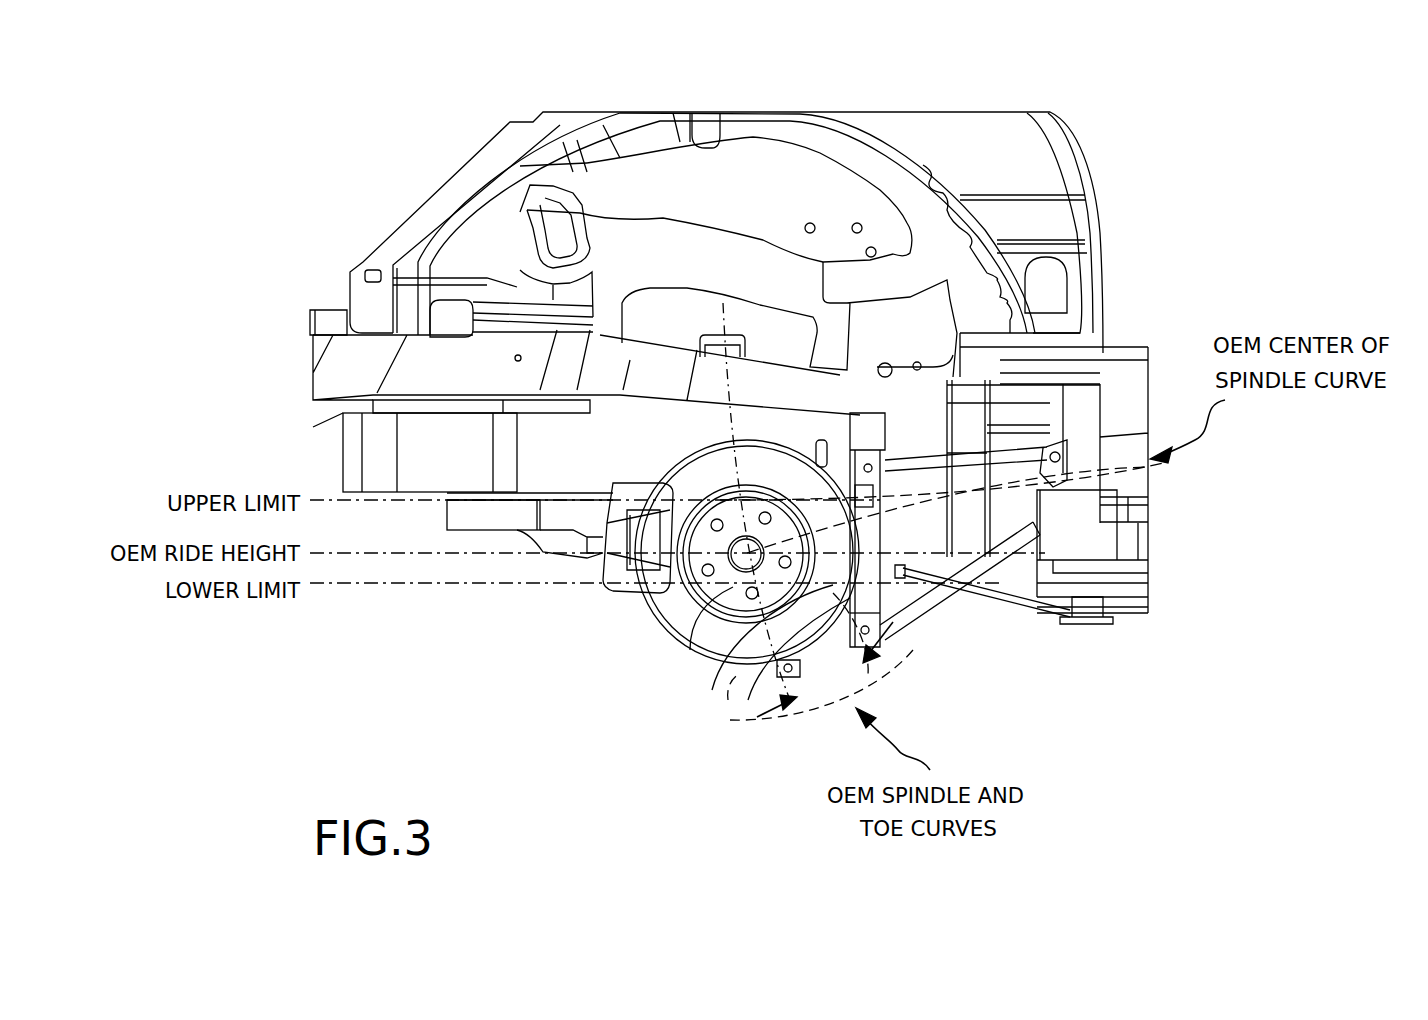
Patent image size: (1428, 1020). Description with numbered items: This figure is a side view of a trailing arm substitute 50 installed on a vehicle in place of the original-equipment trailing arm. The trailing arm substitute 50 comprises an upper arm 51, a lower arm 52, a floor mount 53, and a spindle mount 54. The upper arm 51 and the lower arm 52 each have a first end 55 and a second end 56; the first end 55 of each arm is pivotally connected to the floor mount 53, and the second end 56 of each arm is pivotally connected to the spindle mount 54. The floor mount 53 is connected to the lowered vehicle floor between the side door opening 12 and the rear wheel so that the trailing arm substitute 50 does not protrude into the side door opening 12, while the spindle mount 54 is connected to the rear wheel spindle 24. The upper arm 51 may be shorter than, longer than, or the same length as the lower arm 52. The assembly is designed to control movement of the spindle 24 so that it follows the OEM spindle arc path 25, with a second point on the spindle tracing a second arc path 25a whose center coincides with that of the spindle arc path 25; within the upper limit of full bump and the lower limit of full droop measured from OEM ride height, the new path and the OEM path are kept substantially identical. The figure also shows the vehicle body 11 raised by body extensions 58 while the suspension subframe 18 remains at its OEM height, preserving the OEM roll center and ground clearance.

The vehicle body 11 is at (1133, 362).
The side door opening 12 is at (1158, 153).
The suspension subframe 18 is at (466, 531).
The rear wheel spindle 24 is at (690, 650).
The spindle arc path 25 is at (712, 690).
The second arc path 25a is at (748, 700).
The trailing arm substitute 50 is at (977, 630).
The upper arm 51 is at (1013, 463).
The lower arm 52 is at (963, 587).
The floor mount 53 is at (1053, 473).
The spindle mount 54 is at (870, 623).
The first end 55 is at (930, 513).
The second end 56 is at (880, 549).
The body extensions 58 is at (401, 510).